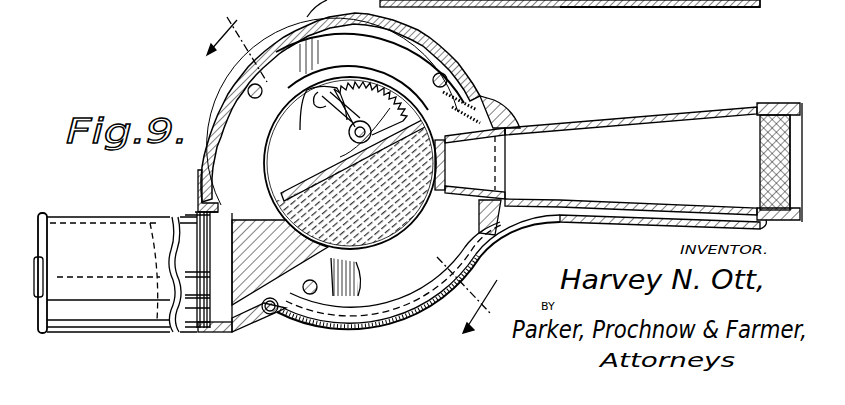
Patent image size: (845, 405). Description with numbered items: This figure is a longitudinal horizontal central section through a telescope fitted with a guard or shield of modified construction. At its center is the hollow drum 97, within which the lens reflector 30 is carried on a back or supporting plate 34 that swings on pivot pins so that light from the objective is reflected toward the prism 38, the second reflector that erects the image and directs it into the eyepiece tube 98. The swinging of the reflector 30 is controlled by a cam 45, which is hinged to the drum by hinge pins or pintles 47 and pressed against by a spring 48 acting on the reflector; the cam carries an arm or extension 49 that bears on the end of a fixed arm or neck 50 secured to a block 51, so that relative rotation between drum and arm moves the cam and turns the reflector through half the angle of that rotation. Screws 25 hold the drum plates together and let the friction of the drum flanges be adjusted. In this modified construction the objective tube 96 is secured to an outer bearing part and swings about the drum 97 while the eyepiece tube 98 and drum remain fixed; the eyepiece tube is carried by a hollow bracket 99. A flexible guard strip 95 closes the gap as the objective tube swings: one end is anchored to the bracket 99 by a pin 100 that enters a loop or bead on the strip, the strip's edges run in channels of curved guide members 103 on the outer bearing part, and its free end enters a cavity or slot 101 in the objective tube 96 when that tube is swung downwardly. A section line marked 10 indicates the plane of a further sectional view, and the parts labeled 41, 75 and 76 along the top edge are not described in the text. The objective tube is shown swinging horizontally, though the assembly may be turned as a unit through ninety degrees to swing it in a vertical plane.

The section line 10- 10 is at (352, 175).
The screws 25 is at (256, 98).
The lens reflector 30 is at (370, 237).
The back or supporting plate 34 is at (278, 186).
The prism 38 is at (228, 238).
The cover plate 41 is at (558, 2).
The cam 45 is at (364, 86).
The hinge pins or pintles 47 is at (340, 157).
The spring 48 is at (336, 82).
The arm or extension 49 is at (349, 112).
The fixed arm or neck 50 is at (307, 106).
The block 51 is at (487, 108).
The plate end 75 is at (612, 2).
The top plate 76 is at (480, 2).
The flexible guard strip 95 is at (478, 266).
The objective tube 96 is at (656, 118).
The drum 97 is at (390, 293).
The eyepiece tube 98 is at (187, 331).
The hollow bracket 99 is at (244, 330).
The pin 100 is at (269, 315).
The cavity or slot 101 is at (595, 215).
The curved guide members 103 is at (455, 262).